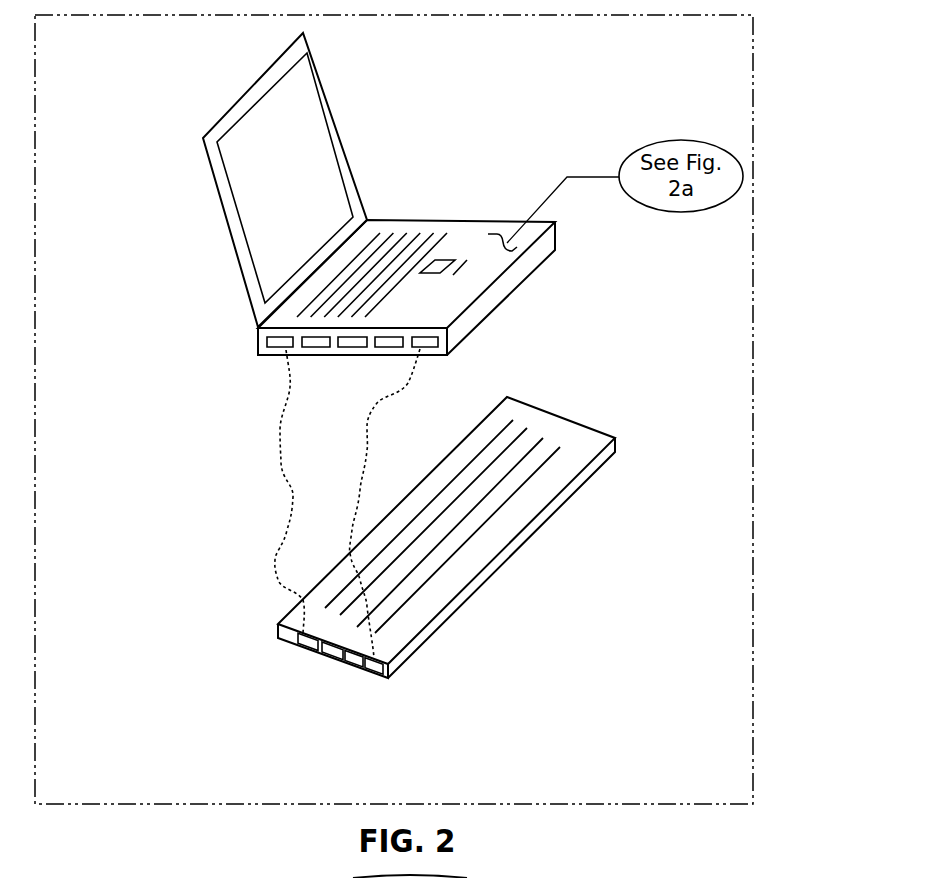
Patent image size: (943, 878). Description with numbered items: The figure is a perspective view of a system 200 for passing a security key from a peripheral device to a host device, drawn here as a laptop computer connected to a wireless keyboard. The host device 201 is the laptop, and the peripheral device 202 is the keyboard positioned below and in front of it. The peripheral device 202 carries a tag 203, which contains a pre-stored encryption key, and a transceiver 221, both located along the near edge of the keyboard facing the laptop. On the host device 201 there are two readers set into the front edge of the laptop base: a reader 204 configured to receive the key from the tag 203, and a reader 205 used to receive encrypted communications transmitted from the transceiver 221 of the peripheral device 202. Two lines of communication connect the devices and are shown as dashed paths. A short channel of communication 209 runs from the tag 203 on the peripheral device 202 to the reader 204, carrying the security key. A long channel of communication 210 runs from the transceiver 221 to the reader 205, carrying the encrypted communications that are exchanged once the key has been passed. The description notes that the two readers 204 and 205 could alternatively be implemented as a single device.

The system 200 is at (753, 68).
The host device 201 is at (413, 220).
The peripheral device 202 is at (582, 425).
The tag 203 is at (372, 676).
The reader 204 is at (447, 340).
The reader 205 is at (283, 348).
The short channel of communication 209 is at (367, 472).
The long channel of communication 210 is at (287, 480).
The transceiver 221 is at (303, 647).